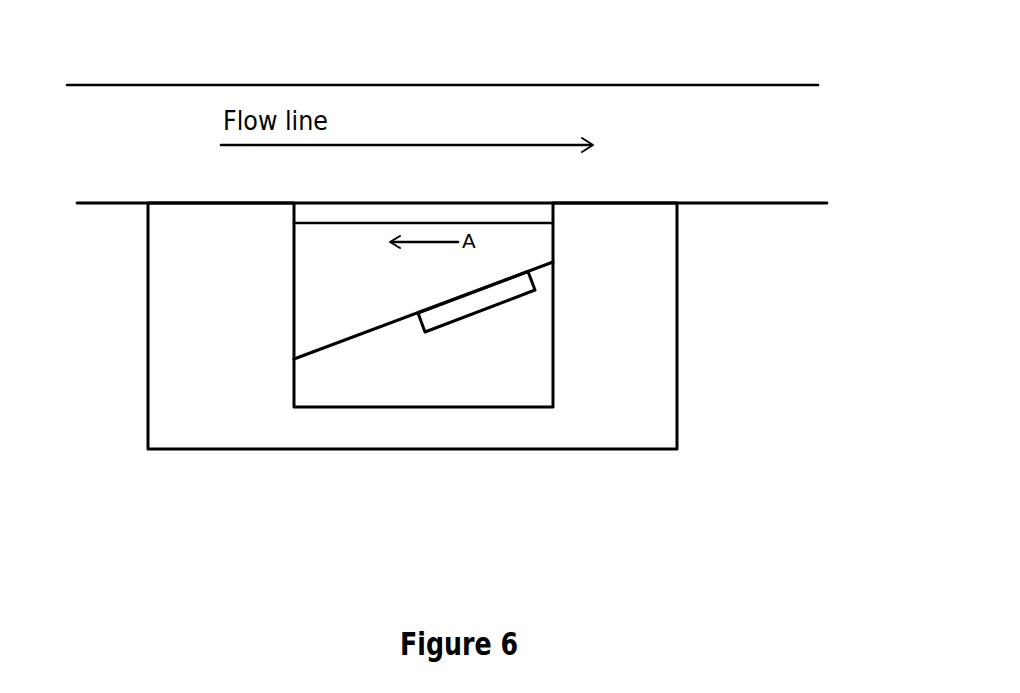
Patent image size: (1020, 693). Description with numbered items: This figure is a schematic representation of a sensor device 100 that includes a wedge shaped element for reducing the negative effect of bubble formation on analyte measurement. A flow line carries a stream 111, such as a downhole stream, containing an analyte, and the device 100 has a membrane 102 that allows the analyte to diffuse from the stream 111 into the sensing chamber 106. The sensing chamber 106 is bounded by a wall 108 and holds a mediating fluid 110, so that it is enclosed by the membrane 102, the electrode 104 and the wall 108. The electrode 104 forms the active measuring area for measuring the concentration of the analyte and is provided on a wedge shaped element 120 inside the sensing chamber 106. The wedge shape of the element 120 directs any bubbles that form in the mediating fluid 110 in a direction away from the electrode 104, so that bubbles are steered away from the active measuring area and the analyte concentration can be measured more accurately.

The device 100 is at (686, 520).
The membrane 102 is at (525, 213).
The electrode 104 is at (480, 313).
The sensing chamber 106 is at (336, 312).
The wall 108 is at (242, 449).
The mediating fluid 110 is at (394, 276).
The stream 111 is at (370, 107).
The wedge shaped element 120 is at (537, 332).